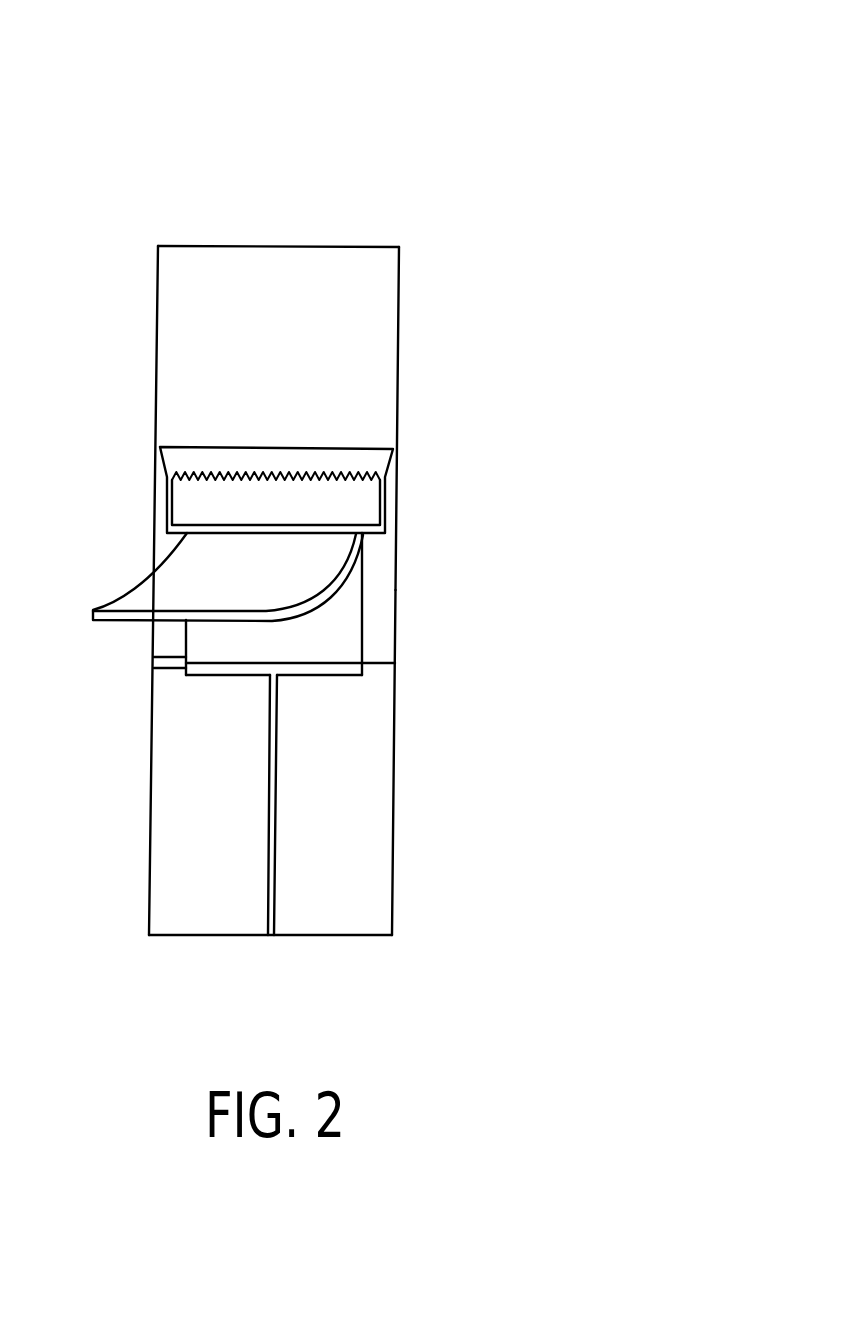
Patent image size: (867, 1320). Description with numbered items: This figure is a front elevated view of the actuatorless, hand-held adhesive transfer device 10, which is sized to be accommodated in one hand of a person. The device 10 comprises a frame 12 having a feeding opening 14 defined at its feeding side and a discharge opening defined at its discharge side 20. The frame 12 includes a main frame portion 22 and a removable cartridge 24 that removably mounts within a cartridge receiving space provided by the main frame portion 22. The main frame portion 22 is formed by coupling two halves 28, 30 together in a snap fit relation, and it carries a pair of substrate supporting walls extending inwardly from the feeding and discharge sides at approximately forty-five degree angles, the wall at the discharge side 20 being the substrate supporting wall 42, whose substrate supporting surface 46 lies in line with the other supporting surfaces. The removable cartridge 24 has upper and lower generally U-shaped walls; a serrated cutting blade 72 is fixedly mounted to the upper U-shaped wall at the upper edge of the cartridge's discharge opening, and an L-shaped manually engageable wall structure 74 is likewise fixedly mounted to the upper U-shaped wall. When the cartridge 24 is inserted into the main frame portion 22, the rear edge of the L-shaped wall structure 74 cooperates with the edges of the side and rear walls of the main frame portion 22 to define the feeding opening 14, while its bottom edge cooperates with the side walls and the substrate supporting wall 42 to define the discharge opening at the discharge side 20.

The printing system 10 is at (505, 105).
The printer 12 is at (562, 545).
The cover 14 is at (395, 223).
The gap 20 is at (442, 650).
The housing side wall 22 is at (394, 790).
The upper housing wall 24 is at (380, 340).
The housing bottom 28 is at (370, 913).
The base 30 is at (165, 867).
The compartment 42 is at (210, 741).
The shelf 46 is at (183, 800).
The serrated tear edge 72 is at (222, 462).
The lid 74 is at (249, 270).